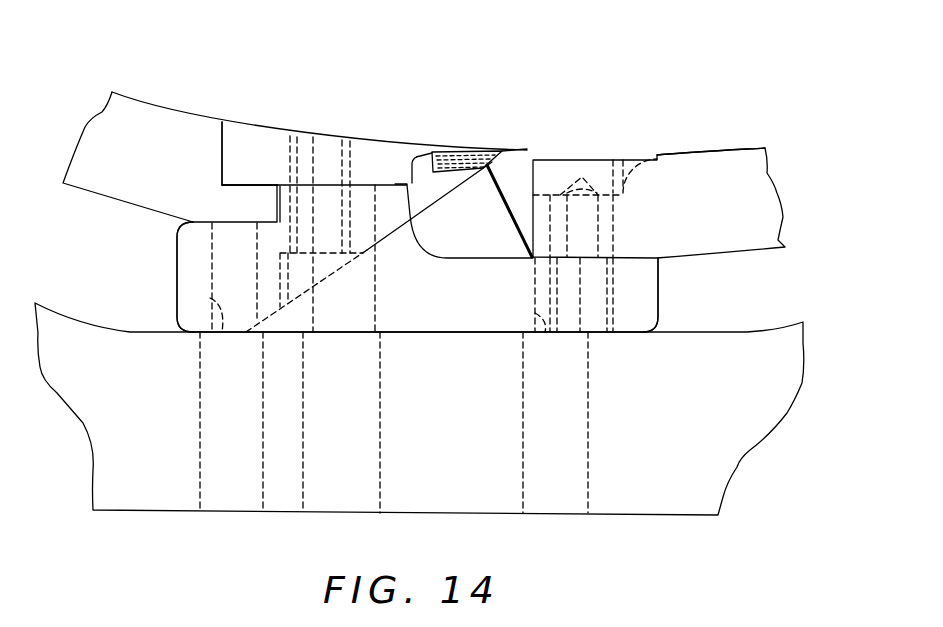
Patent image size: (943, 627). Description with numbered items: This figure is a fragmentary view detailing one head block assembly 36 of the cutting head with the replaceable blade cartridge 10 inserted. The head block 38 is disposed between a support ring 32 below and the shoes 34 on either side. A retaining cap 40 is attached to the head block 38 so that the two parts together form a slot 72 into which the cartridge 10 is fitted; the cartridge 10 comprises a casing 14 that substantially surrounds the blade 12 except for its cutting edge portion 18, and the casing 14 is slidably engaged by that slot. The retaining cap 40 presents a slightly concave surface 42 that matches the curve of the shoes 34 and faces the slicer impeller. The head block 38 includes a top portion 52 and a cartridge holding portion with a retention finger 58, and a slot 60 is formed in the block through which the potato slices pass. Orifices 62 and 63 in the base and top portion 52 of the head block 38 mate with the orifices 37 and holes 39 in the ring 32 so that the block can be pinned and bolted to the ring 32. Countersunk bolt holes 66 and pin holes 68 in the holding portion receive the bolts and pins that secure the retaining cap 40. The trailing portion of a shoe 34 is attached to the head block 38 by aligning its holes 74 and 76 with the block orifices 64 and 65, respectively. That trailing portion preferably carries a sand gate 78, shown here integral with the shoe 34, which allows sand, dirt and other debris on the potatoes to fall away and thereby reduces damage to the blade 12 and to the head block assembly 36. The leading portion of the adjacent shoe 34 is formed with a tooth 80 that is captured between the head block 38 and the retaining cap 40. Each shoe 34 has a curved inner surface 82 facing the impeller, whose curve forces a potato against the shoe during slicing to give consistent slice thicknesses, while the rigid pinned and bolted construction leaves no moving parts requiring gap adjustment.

The replaceable blade cartridge 10 is at (522, 132).
The blade 12 is at (527, 149).
The casing 14 is at (470, 148).
The cutting edge portion 18 is at (527, 150).
The support ring 32 is at (115, 488).
The shoe 34 is at (419, 149).
The head block assembly 36 is at (471, 104).
The orifice in ring 37 is at (263, 482).
The head block 38 is at (170, 257).
The hole in ring 39 is at (377, 492).
The retaining cap 40 is at (235, 148).
The concave surface 42 is at (260, 127).
The top portion 52 is at (192, 292).
The retention finger 58 is at (427, 192).
The slot 60 is at (472, 252).
The orifice in base 62 is at (220, 333).
The orifice in top 63 is at (373, 317).
The orifice for shoe 64 is at (600, 300).
The orifice for shoe 65 is at (600, 333).
The countersunk bolt hole 66 is at (340, 233).
The pin hole 68 is at (303, 157).
The slot 72 is at (418, 158).
The hole in shoe trailing portion 74 is at (612, 228).
The hole in shoe trailing portion 76 is at (598, 246).
The sand gate 78 is at (615, 160).
The tooth 80 is at (233, 202).
The curved inner surface 82 is at (167, 100).